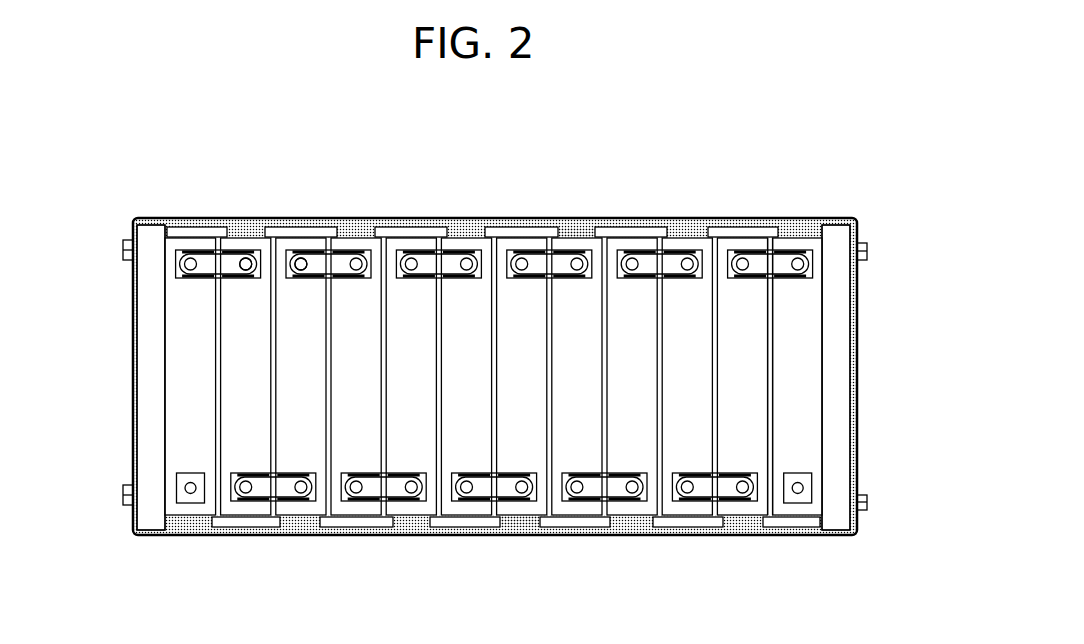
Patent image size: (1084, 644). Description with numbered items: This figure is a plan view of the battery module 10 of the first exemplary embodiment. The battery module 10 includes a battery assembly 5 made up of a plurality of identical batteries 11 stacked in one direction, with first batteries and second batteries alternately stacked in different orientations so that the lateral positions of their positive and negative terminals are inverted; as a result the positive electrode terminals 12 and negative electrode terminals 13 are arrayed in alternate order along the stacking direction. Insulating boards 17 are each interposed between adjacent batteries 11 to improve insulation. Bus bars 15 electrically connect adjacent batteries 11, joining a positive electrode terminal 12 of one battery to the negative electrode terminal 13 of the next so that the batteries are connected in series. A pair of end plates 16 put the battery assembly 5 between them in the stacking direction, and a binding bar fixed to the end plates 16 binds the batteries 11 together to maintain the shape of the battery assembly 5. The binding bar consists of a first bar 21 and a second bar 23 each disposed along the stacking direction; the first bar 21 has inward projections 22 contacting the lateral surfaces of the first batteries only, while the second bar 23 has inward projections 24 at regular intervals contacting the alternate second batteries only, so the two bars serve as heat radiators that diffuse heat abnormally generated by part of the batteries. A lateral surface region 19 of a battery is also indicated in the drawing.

The battery module 10 is at (829, 140).
The battery 11 is at (738, 508).
The positive electrode terminal 12 is at (290, 250).
The negative electrode terminal 13 is at (312, 507).
The bus bar 15 is at (337, 254).
The end plate 16 is at (148, 388).
The insulating board 17 is at (767, 242).
The side surface of battery cell 19 is at (297, 437).
The first bar 21 is at (527, 219).
The projection 22 is at (583, 238).
The second bar 23 is at (570, 535).
The projection 24 is at (517, 520).
The battery assembly 5 is at (651, 242).